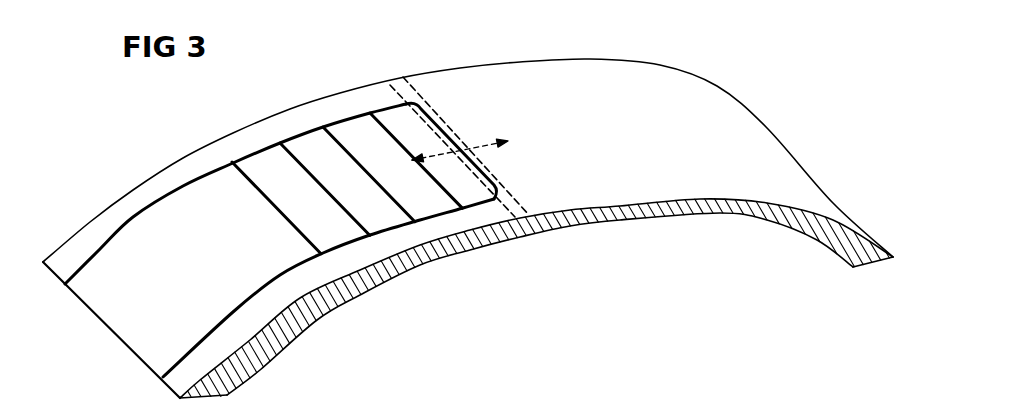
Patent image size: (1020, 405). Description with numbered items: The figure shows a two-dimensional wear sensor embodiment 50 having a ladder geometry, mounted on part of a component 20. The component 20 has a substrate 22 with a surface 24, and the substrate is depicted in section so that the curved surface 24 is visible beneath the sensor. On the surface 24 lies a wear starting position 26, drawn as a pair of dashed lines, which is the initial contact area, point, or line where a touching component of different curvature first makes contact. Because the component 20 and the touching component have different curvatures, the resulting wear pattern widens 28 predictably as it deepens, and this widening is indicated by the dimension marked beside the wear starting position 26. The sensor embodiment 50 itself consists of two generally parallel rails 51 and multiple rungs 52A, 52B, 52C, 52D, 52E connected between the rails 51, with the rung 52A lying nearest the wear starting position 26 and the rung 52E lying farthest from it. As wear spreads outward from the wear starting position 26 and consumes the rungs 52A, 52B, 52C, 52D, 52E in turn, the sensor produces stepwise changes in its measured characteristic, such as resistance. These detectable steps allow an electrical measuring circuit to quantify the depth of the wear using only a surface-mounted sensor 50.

The component 20 is at (500, 273).
The substrate 22 is at (536, 284).
The surface 24 is at (635, 170).
The wear starting position 26 is at (415, 96).
The widening of the wear pattern 28 is at (498, 137).
The sensor embodiment 50 is at (317, 211).
The rails 51 is at (133, 217).
The rung 52A is at (486, 166).
The rung 52B is at (447, 188).
The rung 52C is at (397, 200).
The rung 52D is at (349, 212).
The rung 52E is at (267, 198).